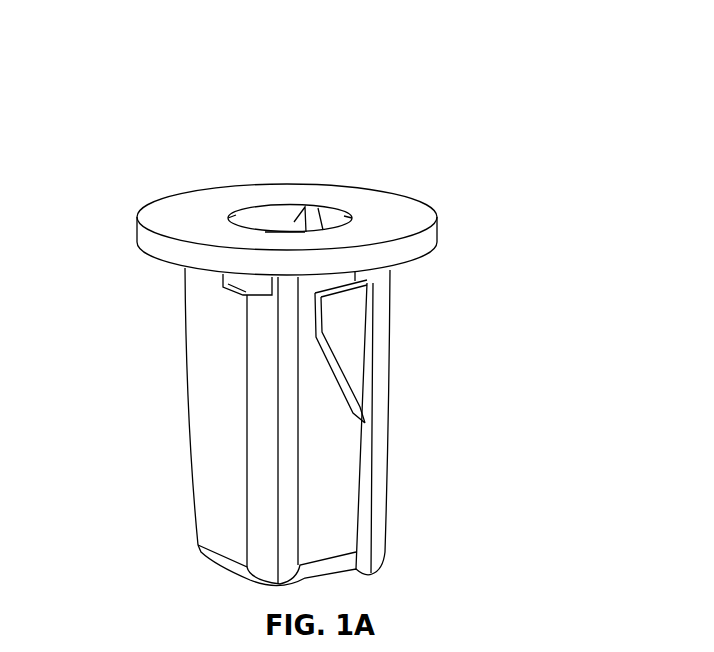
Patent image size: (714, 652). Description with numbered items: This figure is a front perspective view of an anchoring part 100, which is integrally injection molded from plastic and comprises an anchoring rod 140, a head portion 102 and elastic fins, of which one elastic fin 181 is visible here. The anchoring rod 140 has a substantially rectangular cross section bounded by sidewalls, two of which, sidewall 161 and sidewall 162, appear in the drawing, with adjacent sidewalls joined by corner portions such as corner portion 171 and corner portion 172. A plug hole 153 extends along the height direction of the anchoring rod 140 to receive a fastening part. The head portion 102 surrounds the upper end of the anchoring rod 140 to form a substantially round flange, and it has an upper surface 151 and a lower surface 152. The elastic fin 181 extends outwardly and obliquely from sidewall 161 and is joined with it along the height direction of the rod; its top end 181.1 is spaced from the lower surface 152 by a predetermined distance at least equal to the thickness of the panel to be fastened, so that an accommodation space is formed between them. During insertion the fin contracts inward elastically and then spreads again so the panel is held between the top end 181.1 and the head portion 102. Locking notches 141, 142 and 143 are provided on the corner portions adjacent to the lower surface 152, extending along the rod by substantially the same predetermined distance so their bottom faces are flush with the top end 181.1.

The anchoring part 100 is at (328, 140).
The head portion 102 is at (423, 242).
The upper surface 151 is at (412, 204).
The lower surface 152 is at (405, 258).
The plug hole 153 is at (310, 207).
The locking notch 143 is at (273, 223).
The anchoring rod 140 is at (416, 447).
The locking notch 141 is at (368, 280).
The locking notch 142 is at (238, 292).
The sidewall 161 is at (333, 547).
The sidewall 162 is at (200, 467).
The corner portion 171 is at (386, 413).
The corner portion 172 is at (273, 390).
The elastic fin 181 is at (345, 378).
The top end 181.1 is at (378, 292).